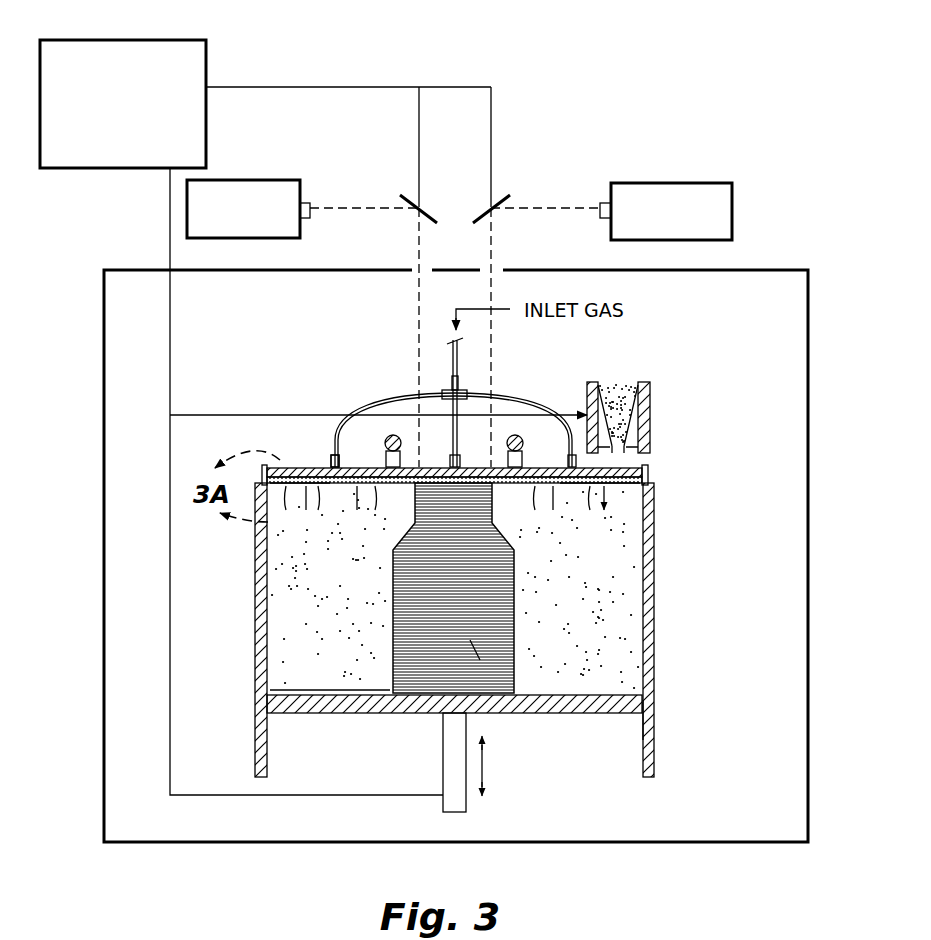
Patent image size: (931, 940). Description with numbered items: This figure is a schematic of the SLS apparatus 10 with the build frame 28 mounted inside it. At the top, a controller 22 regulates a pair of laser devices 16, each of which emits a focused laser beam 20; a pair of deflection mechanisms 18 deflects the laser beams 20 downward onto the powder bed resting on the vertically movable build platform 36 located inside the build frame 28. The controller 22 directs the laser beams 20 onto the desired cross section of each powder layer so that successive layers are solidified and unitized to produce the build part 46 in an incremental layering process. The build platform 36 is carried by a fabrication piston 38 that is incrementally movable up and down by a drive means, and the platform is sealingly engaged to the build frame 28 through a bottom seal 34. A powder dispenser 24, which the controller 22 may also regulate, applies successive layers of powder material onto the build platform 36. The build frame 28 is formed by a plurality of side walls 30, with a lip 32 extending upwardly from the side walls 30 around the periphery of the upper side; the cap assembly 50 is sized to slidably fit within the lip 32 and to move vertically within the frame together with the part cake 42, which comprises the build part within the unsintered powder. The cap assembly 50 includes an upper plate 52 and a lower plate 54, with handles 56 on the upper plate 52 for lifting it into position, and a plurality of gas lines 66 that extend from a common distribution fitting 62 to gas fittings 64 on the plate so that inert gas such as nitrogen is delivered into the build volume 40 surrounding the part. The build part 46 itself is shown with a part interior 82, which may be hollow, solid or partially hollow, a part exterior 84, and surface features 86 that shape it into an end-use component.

The SLS apparatus 10 is at (621, 80).
The laser devices 16 is at (459, 210).
The deflection mechanisms 18 is at (403, 198).
The laser beam 20 is at (340, 208).
The controller 22 is at (313, 417).
The powder dispenser 24 is at (652, 401).
The build frame 28 is at (680, 655).
The side walls 30 is at (258, 601).
The lip 32 is at (640, 479).
The bottom seal 34 is at (643, 720).
The build platform 36 is at (570, 714).
The fabrication piston 38 is at (443, 751).
The build volume 40 is at (290, 651).
The part cake 42 is at (297, 679).
The build part 46 is at (489, 624).
The cap assembly 50 is at (289, 487).
The upper plate 52 is at (600, 468).
The lower plate 54 is at (625, 484).
The handles 56 is at (385, 455).
The distribution fitting 62 is at (444, 391).
The gas fittings 64 is at (328, 462).
The gas lines 66 is at (449, 346).
The part interior 82 is at (480, 660).
The part exterior 84 is at (489, 624).
The surface features 86 is at (514, 641).